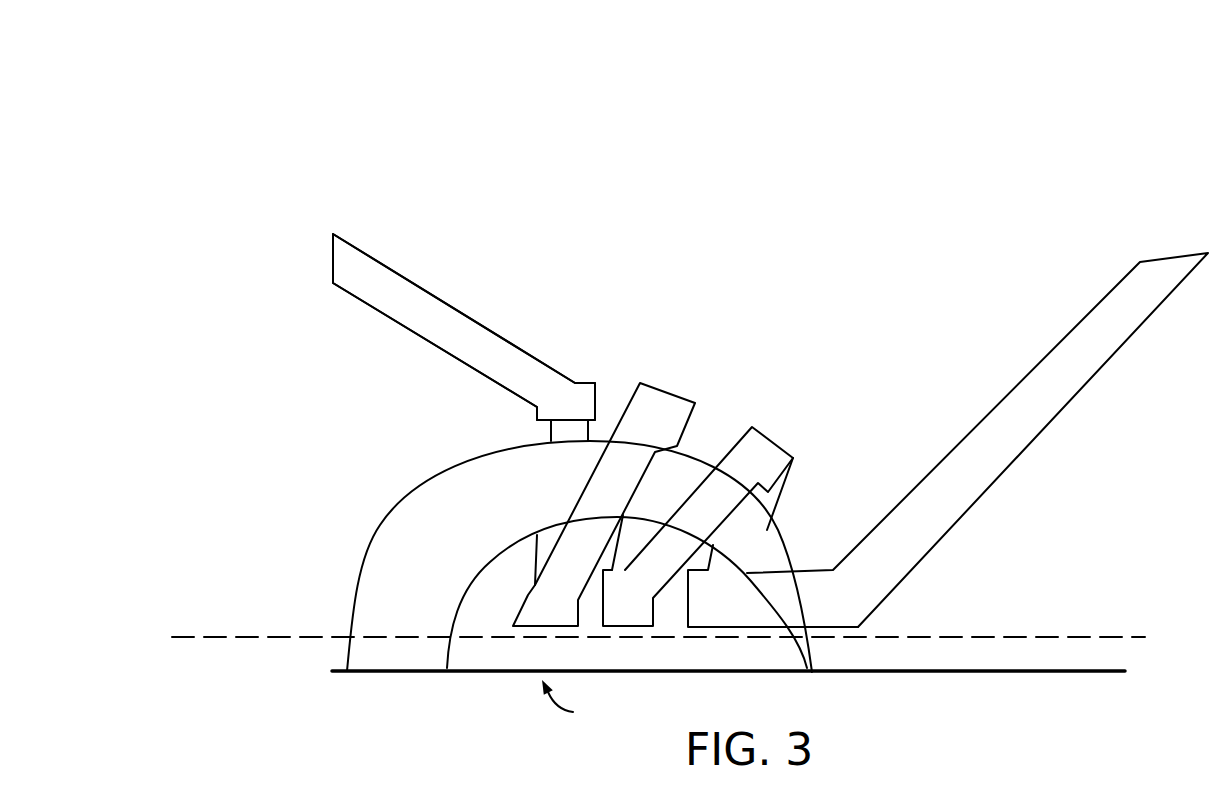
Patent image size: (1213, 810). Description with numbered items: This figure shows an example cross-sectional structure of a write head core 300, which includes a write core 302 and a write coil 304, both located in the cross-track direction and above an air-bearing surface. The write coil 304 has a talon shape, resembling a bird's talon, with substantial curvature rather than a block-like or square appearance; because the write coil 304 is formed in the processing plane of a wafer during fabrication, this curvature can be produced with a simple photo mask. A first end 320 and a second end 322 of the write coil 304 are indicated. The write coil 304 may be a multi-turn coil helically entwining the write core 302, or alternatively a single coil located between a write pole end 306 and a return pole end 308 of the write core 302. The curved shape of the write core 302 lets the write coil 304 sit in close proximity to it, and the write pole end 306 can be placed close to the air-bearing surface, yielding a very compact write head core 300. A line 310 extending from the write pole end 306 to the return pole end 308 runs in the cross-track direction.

The write head core 300 is at (245, 87).
The write core 302 is at (422, 621).
The write coil 304 is at (382, 288).
The write pole end 306 is at (818, 658).
The return pole end 308 is at (400, 658).
The line 310 is at (1048, 634).
The first end of the write coil 320 is at (326, 254).
The second end of the write coil 322 is at (1168, 250).